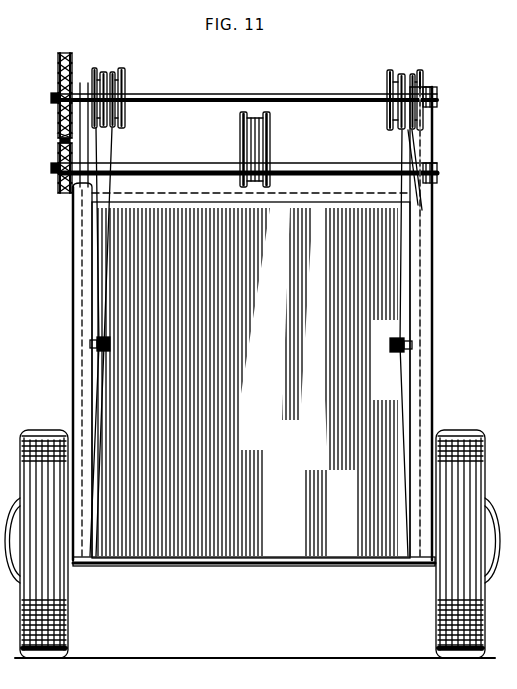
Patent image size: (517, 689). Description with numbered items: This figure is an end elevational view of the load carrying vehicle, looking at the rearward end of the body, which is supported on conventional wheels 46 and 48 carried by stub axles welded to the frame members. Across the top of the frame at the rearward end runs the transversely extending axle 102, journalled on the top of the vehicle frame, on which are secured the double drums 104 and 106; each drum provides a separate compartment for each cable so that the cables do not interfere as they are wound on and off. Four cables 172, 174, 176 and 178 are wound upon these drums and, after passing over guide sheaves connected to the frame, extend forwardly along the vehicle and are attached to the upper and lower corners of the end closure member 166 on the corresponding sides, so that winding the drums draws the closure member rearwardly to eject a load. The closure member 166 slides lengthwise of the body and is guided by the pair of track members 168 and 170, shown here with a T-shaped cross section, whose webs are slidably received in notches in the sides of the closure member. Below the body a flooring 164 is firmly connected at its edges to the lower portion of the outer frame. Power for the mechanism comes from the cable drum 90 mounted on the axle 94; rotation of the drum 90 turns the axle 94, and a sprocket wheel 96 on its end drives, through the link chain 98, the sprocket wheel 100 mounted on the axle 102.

The wheel 46 is at (465, 430).
The wheel 48 is at (45, 430).
The drum 90 is at (271, 137).
The axle 94 is at (237, 168).
The sprocket wheel 96 is at (60, 188).
The link chain 98 is at (60, 141).
The sprocket wheel 100 is at (58, 72).
The axle 102 is at (279, 96).
The drum 104 is at (129, 46).
The drum 106 is at (410, 45).
The flooring 164 is at (183, 565).
The end closure member 166 is at (297, 545).
The track member 168 is at (103, 340).
The track member 170 is at (402, 342).
The cable 172 is at (90, 201).
The cable 174 is at (110, 150).
The cable 176 is at (400, 148).
The cable 178 is at (416, 150).